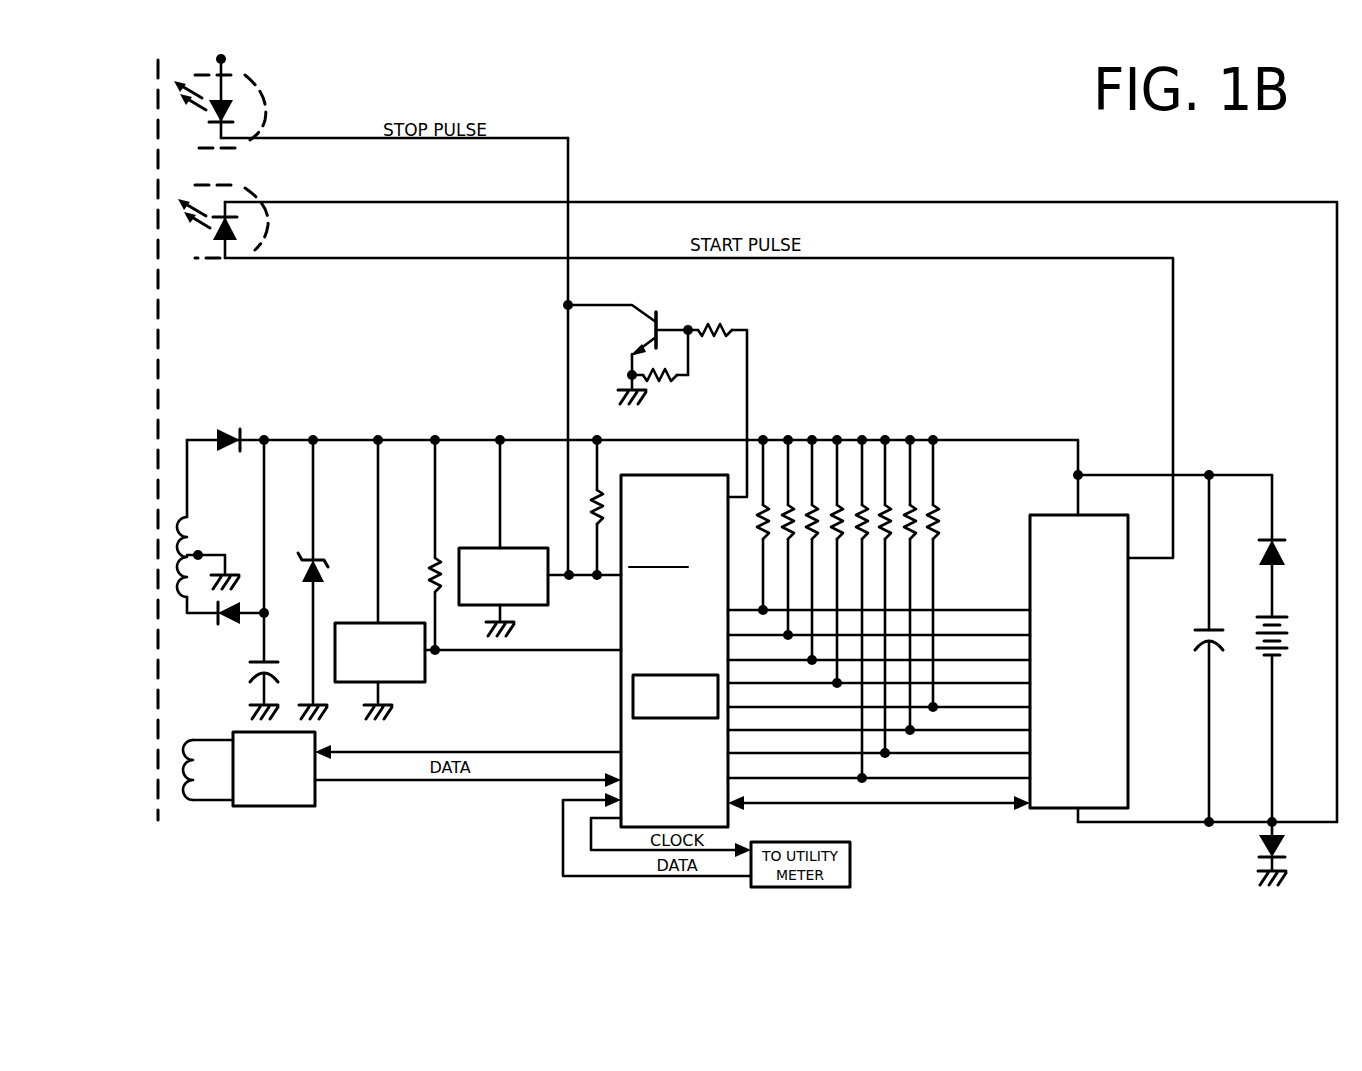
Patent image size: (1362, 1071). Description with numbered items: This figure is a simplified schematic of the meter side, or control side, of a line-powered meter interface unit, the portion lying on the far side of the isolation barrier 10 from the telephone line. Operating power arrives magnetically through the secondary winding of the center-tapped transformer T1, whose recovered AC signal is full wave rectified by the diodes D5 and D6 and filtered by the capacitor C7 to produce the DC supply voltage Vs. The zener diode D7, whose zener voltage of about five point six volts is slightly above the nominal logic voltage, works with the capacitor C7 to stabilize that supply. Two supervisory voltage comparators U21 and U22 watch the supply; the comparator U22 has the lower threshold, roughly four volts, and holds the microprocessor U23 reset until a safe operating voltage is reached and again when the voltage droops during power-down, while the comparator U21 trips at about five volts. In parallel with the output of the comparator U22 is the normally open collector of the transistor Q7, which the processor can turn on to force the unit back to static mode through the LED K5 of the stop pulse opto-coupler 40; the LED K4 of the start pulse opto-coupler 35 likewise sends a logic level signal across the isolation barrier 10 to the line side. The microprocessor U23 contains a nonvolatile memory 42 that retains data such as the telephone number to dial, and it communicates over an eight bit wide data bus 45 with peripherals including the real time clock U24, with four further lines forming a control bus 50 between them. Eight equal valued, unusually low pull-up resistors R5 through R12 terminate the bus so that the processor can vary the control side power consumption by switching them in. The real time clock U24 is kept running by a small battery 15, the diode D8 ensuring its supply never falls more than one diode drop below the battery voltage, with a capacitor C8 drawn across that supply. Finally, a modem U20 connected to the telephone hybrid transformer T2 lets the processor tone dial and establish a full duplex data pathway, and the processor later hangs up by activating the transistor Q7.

The isolation barrier 10 is at (160, 333).
The battery 15 is at (1276, 614).
The start pulse opto-coupler 35 is at (227, 218).
The stop pulse opto-coupler 40 is at (228, 99).
The nonvolatile memory 42 is at (663, 675).
The data bus 45 is at (787, 798).
The control bus 50 is at (948, 805).
The LED of stop pulse opto-coupler K5 is at (210, 122).
The LED of start pulse opto-coupler K4 is at (210, 240).
The transistor Q7 is at (638, 310).
The diode D5 is at (222, 430).
The diode D6 is at (236, 626).
The zener diode D7 is at (321, 579).
The diode D8 is at (1278, 540).
The filter capacitor C7 is at (270, 660).
The capacitor C8 is at (1214, 628).
The center-tapped transformer T1 is at (186, 597).
The telephone hybrid transformer T2 is at (193, 800).
The modem U20 is at (274, 769).
The voltage comparator U21 is at (372, 622).
The voltage comparator U22 is at (494, 546).
The microprocessor U23 is at (674, 638).
The real time clock U24 is at (1043, 514).
The pull-up resistor R5 is at (762, 540).
The pull-up resistor R12 is at (936, 540).